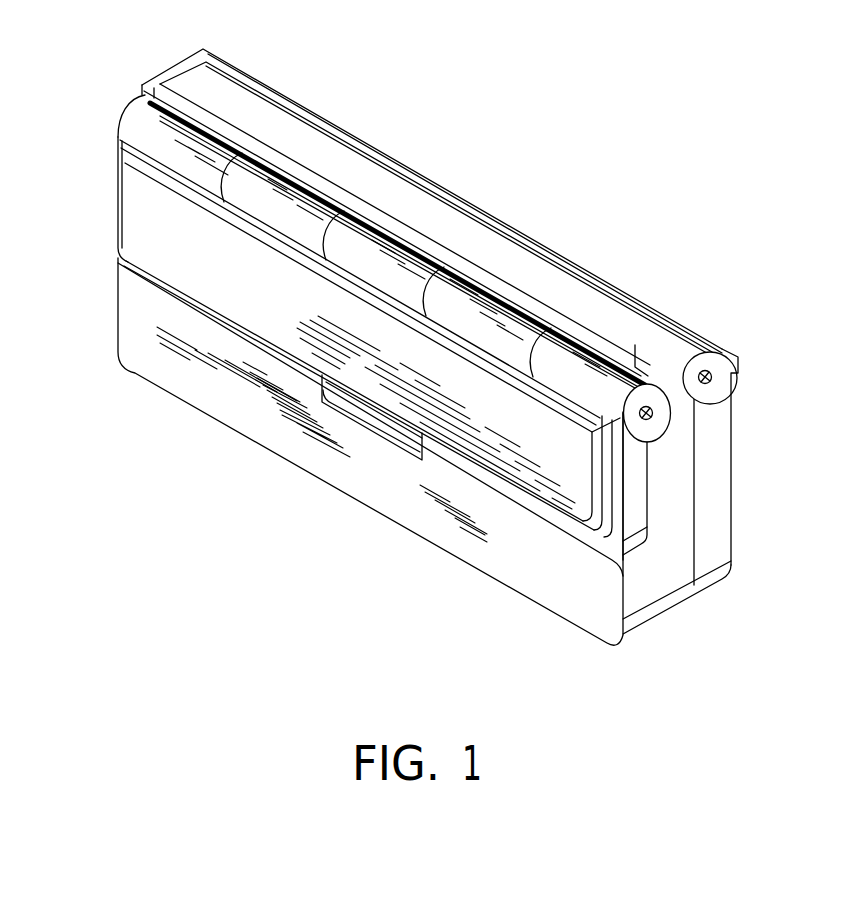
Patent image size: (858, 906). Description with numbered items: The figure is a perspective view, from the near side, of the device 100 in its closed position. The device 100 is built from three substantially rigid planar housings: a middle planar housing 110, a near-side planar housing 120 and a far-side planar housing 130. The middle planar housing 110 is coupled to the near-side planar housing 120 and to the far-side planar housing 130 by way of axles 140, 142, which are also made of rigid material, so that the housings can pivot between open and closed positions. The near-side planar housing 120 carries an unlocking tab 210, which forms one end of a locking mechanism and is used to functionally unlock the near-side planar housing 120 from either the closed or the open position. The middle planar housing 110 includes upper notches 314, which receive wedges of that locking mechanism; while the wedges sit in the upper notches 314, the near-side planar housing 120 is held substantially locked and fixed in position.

The device 100 is at (459, 375).
The middle planar housing 110 is at (667, 570).
The near-side planar housing 120 is at (622, 483).
The far-side planar housing 130 is at (752, 414).
The axle 140 is at (652, 398).
The axle 142 is at (713, 360).
The unlocking tab 210 is at (370, 408).
The upper notches 314 is at (447, 320).